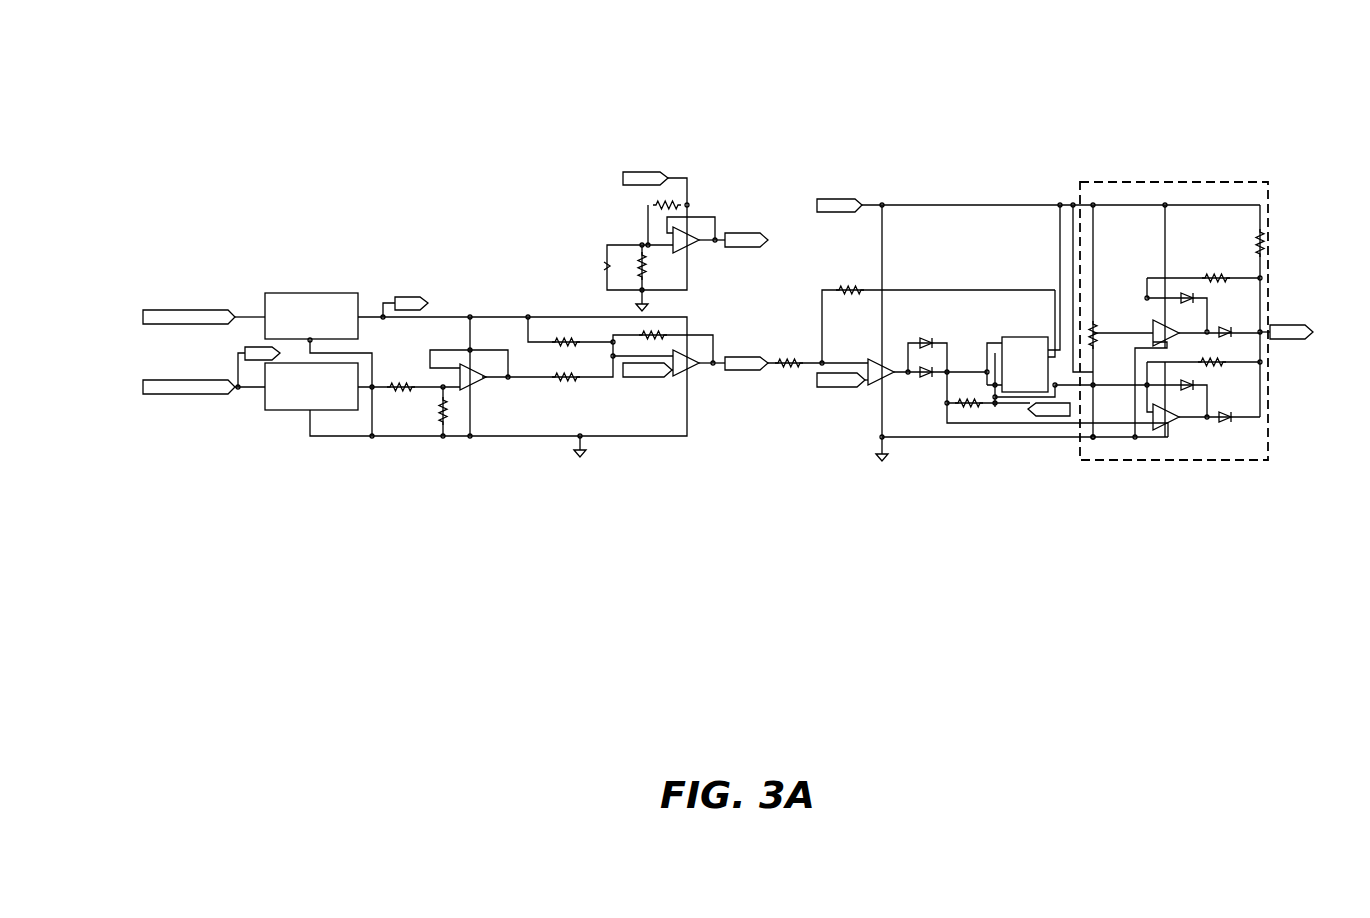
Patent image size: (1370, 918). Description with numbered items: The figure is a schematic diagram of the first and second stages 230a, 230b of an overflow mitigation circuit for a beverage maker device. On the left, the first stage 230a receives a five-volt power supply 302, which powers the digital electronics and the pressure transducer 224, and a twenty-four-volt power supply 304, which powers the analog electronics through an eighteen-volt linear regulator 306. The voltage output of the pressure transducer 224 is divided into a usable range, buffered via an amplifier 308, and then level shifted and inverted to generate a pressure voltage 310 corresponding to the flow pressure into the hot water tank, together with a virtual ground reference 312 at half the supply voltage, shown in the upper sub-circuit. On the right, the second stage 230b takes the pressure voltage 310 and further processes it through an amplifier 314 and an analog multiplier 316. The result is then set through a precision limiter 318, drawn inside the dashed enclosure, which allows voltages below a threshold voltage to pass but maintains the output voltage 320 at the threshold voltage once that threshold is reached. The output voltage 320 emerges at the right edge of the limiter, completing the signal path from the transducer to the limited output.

The first stage 230a is at (188, 143).
The second stage 230b is at (828, 140).
The +5V power supply 302 is at (180, 395).
The +24V power supply 304 is at (180, 305).
The +18V linear regulator 306 is at (303, 310).
The pressure transducer 224 is at (292, 398).
The amplifier 308 is at (470, 380).
The pressure voltage 310 is at (742, 362).
The virtual ground reference 312 is at (740, 240).
The amplifier 314 is at (878, 375).
The analog multiplier 316 is at (1030, 363).
The precision limiter 318 is at (1175, 183).
The output voltage 320 is at (1292, 338).